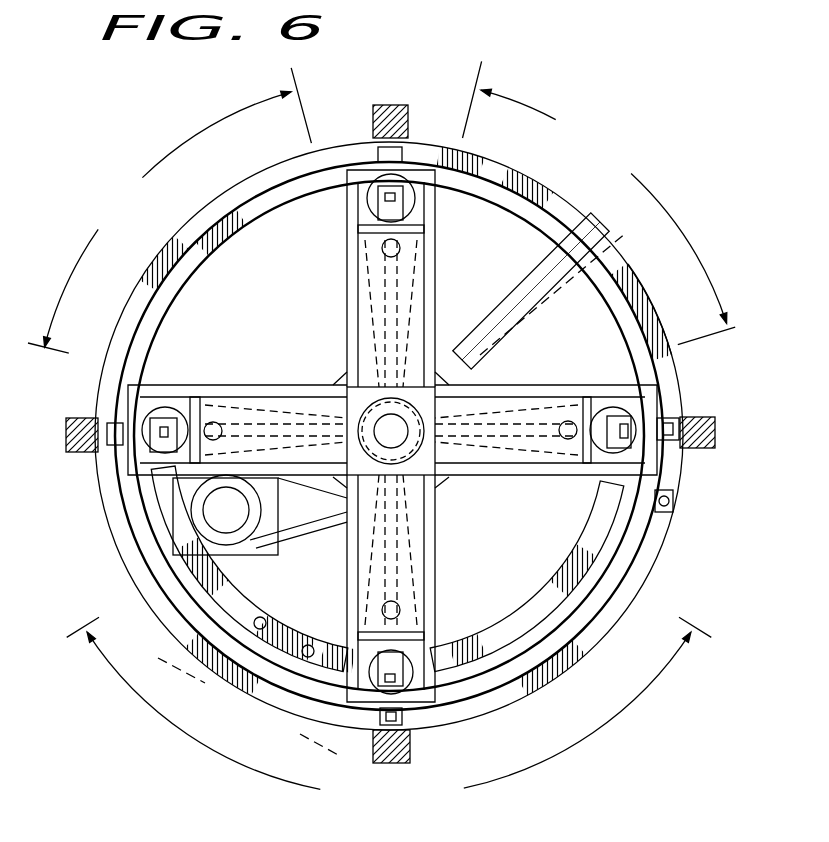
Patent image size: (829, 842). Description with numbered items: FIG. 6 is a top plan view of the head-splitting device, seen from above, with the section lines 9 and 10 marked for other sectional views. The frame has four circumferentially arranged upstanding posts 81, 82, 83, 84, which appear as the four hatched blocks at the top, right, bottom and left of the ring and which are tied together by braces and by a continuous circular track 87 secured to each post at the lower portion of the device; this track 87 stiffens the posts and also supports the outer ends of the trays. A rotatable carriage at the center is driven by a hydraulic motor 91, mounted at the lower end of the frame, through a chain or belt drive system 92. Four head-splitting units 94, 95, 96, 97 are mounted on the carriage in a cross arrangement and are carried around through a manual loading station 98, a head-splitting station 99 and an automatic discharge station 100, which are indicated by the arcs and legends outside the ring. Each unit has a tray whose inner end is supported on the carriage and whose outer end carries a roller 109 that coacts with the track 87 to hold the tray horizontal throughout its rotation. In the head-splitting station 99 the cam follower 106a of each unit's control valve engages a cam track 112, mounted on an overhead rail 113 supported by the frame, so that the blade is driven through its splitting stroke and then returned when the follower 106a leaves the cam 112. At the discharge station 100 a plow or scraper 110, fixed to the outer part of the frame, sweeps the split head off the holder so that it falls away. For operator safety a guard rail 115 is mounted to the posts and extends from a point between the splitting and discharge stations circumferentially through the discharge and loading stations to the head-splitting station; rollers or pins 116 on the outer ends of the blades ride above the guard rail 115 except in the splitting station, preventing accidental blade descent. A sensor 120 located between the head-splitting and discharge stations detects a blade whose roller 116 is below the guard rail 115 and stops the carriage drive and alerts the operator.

The section line 9- 9 is at (334, 729).
The section line 10- 10 is at (450, 357).
The upstanding post 81 is at (66, 446).
The upstanding post 82 is at (394, 104).
The upstanding post 83 is at (715, 435).
The upstanding post 84 is at (411, 748).
The circular track 87 is at (607, 605).
The hydraulic motor 91 is at (255, 510).
The chain or belt drive system 92 is at (322, 526).
The head-splitting unit 94 is at (291, 386).
The head-splitting unit 95 is at (437, 270).
The head-splitting unit 96 is at (553, 480).
The head-splitting unit 97 is at (346, 567).
The manual loading station 98 is at (141, 181).
The head-splitting station 99 is at (313, 789).
The automatic discharge station 100 is at (663, 196).
The cam follower 106a is at (626, 428).
The roller 109 is at (379, 721).
The plow or scraper 110 is at (527, 299).
The cam track 112 is at (281, 622).
The overhead rail 113 is at (524, 612).
The guard rail 115 is at (115, 495).
The rollers or pins 116 is at (672, 432).
The sensor 120 is at (672, 500).